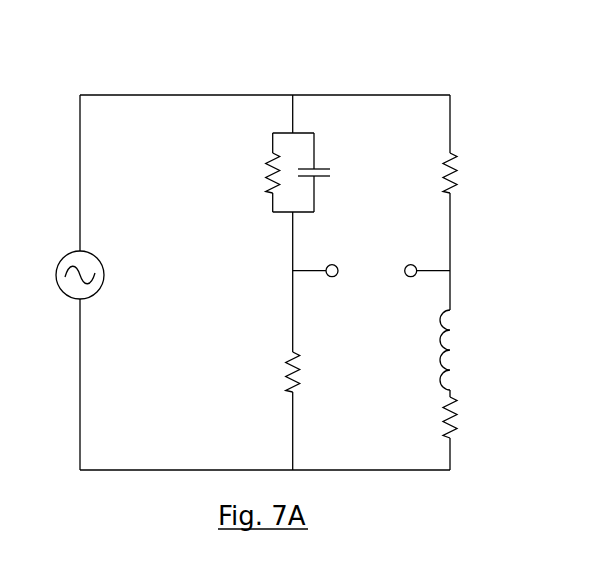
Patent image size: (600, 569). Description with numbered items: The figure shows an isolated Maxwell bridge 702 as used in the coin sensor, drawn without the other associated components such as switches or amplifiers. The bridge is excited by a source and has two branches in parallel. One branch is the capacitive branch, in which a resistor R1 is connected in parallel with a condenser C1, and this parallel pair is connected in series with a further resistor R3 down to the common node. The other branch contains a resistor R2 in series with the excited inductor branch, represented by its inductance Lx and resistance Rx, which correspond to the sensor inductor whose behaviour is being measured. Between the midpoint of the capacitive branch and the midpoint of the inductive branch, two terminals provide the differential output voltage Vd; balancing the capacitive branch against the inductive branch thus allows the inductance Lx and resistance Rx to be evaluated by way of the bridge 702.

The Maxwell bridge 702 is at (386, 84).
The resistor R1 is at (256, 173).
The condenser C1 is at (331, 171).
The resistor R2 is at (470, 173).
The resistor R3 is at (275, 372).
The unknown inductance Lx is at (467, 350).
The unknown resistance Rx is at (470, 417).
The differential voltage Vd is at (371, 257).